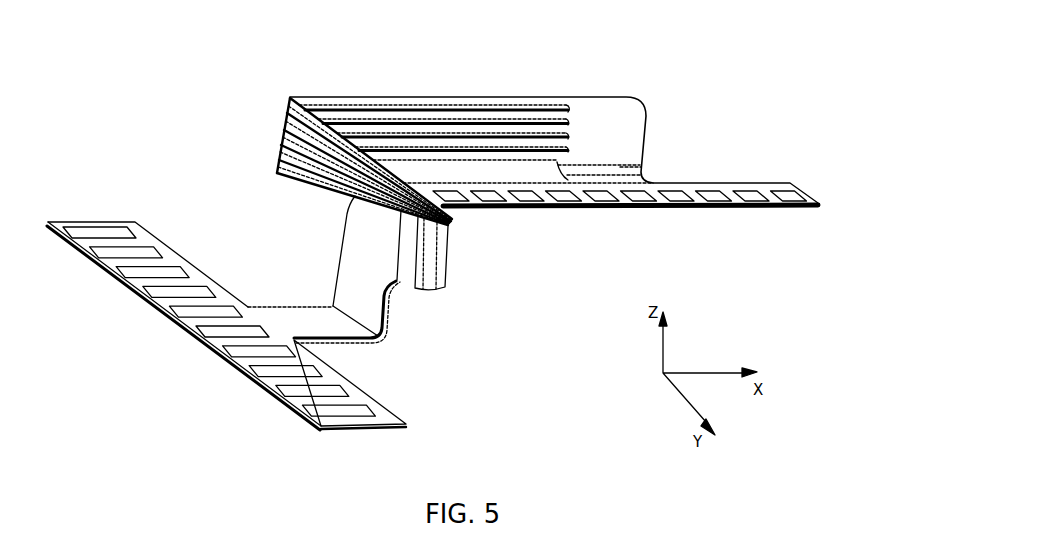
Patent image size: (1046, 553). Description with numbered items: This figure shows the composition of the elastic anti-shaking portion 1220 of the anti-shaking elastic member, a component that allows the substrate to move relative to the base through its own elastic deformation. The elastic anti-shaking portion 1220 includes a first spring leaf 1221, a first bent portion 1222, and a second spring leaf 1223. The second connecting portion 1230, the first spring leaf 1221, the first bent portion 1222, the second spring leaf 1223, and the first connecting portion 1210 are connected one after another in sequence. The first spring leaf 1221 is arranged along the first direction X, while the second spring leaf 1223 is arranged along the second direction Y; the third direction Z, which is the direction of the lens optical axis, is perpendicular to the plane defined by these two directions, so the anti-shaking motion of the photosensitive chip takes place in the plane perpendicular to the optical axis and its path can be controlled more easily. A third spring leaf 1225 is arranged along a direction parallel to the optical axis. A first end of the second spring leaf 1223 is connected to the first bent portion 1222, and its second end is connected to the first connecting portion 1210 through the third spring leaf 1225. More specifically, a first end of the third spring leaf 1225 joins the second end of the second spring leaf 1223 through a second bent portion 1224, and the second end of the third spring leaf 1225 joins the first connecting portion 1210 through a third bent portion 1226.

The first connecting portion 1210 is at (178, 323).
The elastic anti-shaking portion 1220 is at (308, 76).
The first spring leaf 1221 is at (453, 128).
The first bent portion 1222 is at (291, 99).
The second spring leaf 1223 is at (303, 184).
The second bent portion 1224 is at (430, 268).
The third spring leaf 1225 is at (353, 260).
The third bent portion 1226 is at (381, 338).
The second connecting portion 1230 is at (728, 206).